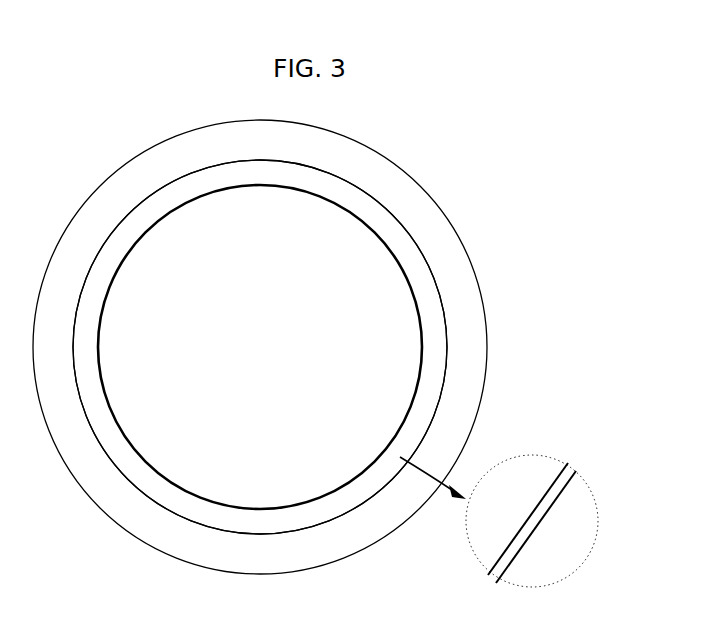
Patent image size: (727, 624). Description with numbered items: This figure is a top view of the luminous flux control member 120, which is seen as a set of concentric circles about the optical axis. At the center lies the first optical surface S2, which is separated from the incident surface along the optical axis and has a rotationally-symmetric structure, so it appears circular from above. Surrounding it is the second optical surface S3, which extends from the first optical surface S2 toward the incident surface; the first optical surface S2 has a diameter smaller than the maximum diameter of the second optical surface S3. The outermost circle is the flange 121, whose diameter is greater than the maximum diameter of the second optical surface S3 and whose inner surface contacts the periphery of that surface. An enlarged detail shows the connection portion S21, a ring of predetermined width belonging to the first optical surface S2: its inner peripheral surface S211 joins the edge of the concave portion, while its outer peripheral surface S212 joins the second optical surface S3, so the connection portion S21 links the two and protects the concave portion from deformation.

The luminous flux control member 120 is at (452, 173).
The flange 121 is at (470, 293).
The second optical surface S3 is at (432, 338).
The first optical surface S2 is at (397, 382).
The connection portion S21 is at (557, 506).
The inner peripheral surface S211 is at (566, 461).
The outer peripheral surface S212 is at (579, 475).